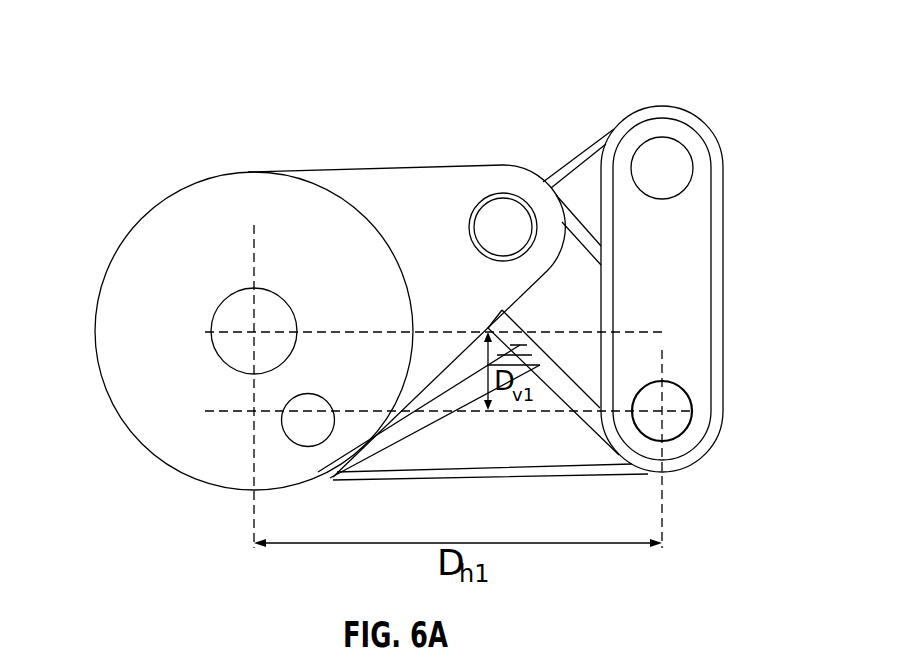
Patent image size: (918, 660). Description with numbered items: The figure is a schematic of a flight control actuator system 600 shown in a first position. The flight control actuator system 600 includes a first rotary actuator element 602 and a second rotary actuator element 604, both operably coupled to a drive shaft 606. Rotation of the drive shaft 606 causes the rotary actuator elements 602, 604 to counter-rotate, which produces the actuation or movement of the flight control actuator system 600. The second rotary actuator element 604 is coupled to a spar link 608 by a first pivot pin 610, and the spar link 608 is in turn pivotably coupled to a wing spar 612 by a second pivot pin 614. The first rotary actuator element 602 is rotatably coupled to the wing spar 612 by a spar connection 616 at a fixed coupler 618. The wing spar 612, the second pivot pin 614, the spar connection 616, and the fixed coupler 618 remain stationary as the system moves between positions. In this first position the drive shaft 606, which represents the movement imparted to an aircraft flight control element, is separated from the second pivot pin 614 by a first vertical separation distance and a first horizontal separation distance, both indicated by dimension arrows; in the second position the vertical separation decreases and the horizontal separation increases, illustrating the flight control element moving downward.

The flight control actuator system 600 is at (609, 32).
The first rotary actuator element 602 is at (207, 200).
The second rotary actuator element 604 is at (381, 184).
The drive shaft 606 is at (227, 313).
The spar link 608 is at (580, 282).
The first pivot pin 610 is at (505, 213).
The wing spar 612 is at (688, 138).
The second pivot pin 614 is at (675, 423).
The spar connection 616 is at (507, 480).
The fixed coupler 618 is at (300, 443).